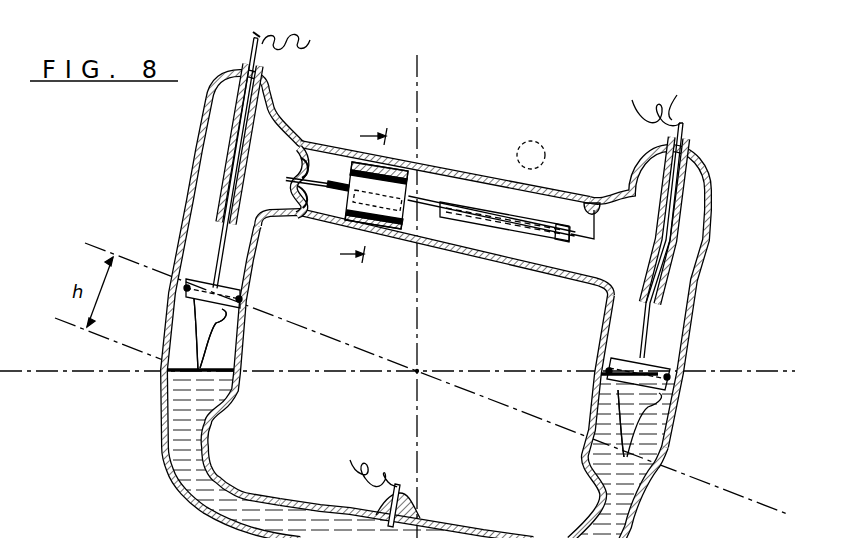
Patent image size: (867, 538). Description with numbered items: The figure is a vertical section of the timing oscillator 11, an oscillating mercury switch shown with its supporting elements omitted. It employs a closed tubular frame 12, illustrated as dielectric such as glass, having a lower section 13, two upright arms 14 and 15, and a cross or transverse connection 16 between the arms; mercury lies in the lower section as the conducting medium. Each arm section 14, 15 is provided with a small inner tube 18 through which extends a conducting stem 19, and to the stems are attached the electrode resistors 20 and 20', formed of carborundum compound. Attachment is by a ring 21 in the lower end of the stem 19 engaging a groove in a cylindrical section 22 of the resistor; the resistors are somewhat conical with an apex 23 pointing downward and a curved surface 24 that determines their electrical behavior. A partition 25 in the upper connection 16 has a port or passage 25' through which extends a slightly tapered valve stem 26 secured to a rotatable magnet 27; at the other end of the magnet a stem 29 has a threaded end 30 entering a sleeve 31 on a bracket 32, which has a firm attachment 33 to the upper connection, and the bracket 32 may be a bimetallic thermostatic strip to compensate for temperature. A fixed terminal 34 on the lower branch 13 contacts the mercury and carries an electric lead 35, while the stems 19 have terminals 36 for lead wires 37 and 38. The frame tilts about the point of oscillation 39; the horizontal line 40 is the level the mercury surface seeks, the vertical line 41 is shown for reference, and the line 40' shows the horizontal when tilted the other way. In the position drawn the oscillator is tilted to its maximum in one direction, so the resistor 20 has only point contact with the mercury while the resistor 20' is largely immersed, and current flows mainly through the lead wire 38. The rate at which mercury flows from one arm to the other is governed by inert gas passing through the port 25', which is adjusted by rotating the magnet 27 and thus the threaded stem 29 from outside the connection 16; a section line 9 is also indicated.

The section line 9- 9 is at (352, 197).
The timing oscillator 11 is at (553, 112).
The closed tubular frame 12 is at (634, 517).
The lower section 13 is at (300, 477).
The upright arm 14 is at (186, 223).
The upright arm 15 is at (700, 265).
The cross or transverse connection 16 is at (432, 204).
The small inner tube 18 is at (236, 129).
The conducting stem 19 is at (252, 50).
The electrode resistor 20 is at (168, 334).
The electrode resistor 20' is at (585, 423).
The ring 21 is at (242, 297).
The cylindrical section 22 is at (187, 290).
The apex 23 is at (197, 380).
The curved surface 24 is at (226, 322).
The partition 25 is at (276, 163).
The port or passage 25' is at (272, 195).
The valve stem 26 is at (322, 178).
The rotatable magnet 27 is at (406, 163).
The stem 29 is at (470, 205).
The threaded end 30 is at (503, 218).
The sleeve 31 is at (530, 222).
The bracket 32 is at (597, 238).
The attachment 33 is at (596, 196).
The fixed terminal 34 is at (401, 494).
The electric lead 35 is at (375, 462).
The terminal 36 is at (241, 29).
The lead wire 37 is at (302, 37).
The lead wire 38 is at (669, 100).
The point of oscillation 39 is at (418, 371).
The horizontal line 40 is at (397, 389).
The horizontal line 40' is at (422, 379).
The vertical line 41 is at (418, 278).